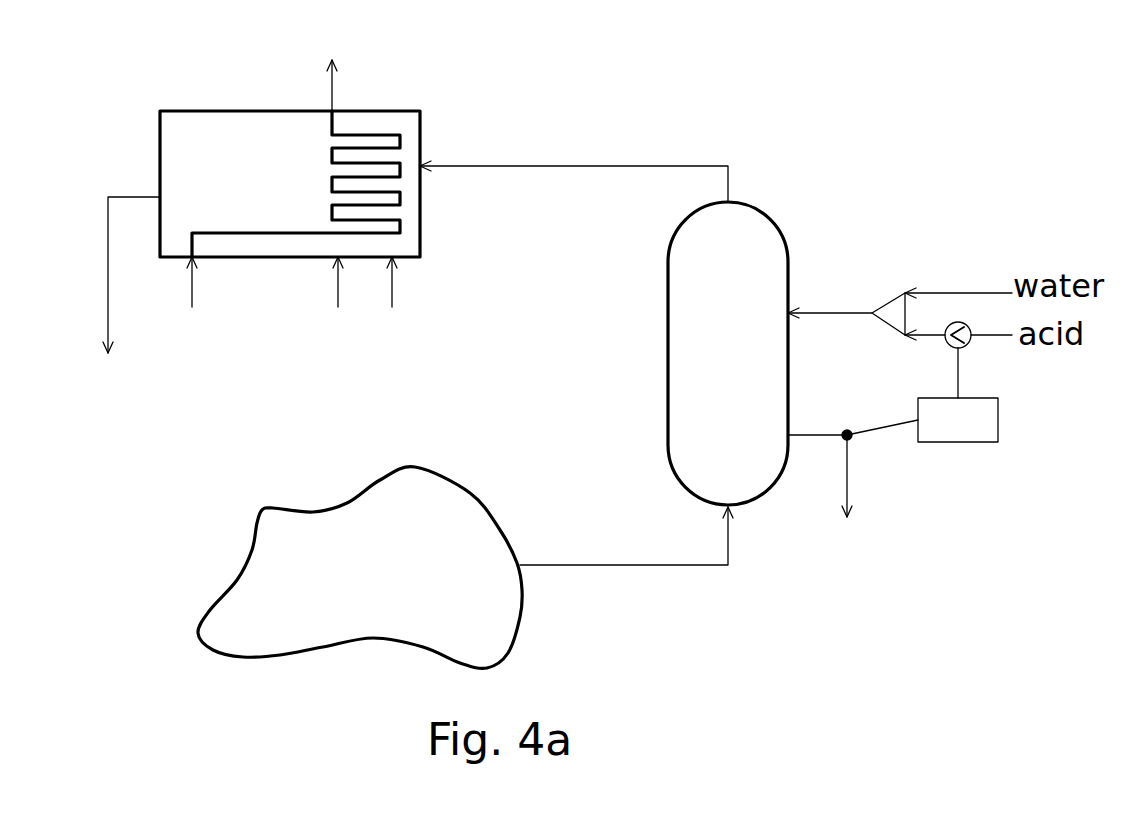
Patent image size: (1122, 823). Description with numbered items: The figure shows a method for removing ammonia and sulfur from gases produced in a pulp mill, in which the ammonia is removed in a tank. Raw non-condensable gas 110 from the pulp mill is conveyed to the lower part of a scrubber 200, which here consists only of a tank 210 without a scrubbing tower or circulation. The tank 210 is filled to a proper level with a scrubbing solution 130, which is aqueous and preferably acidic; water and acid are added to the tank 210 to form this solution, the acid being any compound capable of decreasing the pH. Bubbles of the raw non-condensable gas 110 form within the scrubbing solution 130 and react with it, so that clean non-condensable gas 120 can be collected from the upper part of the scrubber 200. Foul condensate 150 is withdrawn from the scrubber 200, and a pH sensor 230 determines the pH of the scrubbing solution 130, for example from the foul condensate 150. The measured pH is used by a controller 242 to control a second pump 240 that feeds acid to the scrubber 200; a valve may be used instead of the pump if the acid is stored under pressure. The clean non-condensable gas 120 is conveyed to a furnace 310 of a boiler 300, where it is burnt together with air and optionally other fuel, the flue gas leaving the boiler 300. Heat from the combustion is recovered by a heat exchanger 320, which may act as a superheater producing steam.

The raw non-condensable gas 110 is at (612, 566).
The clean non-condensable gas 120 is at (687, 163).
The scrubbing solution 130 is at (758, 469).
The foul condensate 150 is at (847, 488).
The scrubber 200 is at (673, 240).
The tank 210 is at (668, 333).
The pH sensor 230 is at (851, 438).
The second pump 240 is at (968, 345).
The controller 242 is at (986, 436).
The boiler 300 is at (160, 165).
The furnace 310 is at (290, 187).
The heat exchanger 320 is at (372, 135).